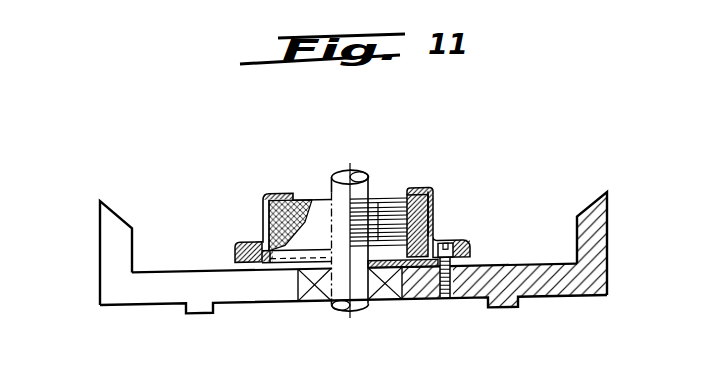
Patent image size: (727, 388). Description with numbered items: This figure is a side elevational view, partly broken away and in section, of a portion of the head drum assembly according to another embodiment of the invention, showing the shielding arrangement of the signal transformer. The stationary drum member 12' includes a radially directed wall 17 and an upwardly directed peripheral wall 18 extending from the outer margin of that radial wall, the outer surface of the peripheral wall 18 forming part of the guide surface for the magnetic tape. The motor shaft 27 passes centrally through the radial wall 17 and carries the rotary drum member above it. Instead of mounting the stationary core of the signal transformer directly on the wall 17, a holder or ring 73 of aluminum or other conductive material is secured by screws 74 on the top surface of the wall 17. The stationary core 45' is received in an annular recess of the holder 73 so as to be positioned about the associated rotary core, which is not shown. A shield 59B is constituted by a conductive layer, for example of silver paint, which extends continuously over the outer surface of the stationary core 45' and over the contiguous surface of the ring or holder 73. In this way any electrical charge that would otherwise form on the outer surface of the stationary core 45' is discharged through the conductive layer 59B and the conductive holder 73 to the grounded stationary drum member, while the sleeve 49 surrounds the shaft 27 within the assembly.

The radially directed wall 17 is at (557, 293).
The upwardly directed peripheral wall 18 is at (110, 272).
The stationary drum member 12' is at (632, 242).
The motor shaft 27 is at (330, 196).
The grooved sleeve / bushing 49 is at (403, 198).
The shield 59B is at (266, 227).
The stationary core 45' is at (443, 241).
The holder 73 is at (258, 270).
The screws 74 is at (457, 281).